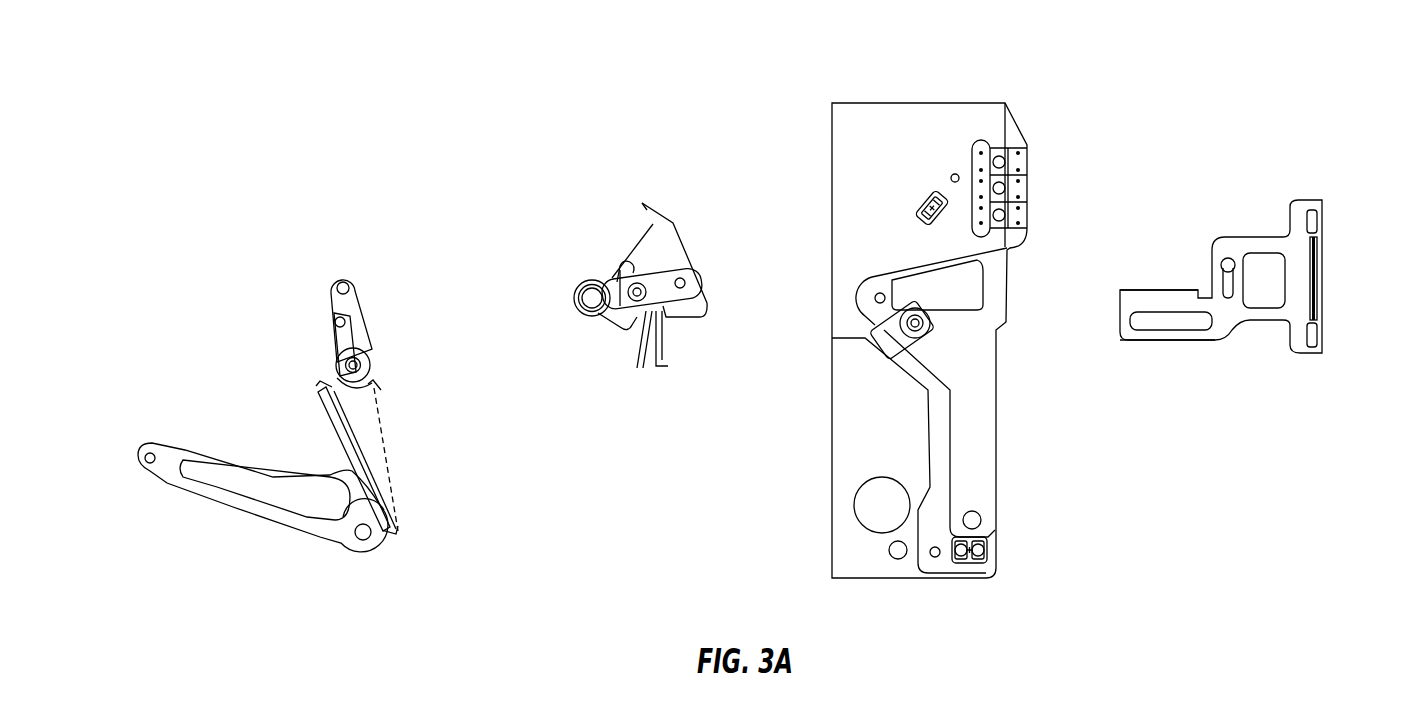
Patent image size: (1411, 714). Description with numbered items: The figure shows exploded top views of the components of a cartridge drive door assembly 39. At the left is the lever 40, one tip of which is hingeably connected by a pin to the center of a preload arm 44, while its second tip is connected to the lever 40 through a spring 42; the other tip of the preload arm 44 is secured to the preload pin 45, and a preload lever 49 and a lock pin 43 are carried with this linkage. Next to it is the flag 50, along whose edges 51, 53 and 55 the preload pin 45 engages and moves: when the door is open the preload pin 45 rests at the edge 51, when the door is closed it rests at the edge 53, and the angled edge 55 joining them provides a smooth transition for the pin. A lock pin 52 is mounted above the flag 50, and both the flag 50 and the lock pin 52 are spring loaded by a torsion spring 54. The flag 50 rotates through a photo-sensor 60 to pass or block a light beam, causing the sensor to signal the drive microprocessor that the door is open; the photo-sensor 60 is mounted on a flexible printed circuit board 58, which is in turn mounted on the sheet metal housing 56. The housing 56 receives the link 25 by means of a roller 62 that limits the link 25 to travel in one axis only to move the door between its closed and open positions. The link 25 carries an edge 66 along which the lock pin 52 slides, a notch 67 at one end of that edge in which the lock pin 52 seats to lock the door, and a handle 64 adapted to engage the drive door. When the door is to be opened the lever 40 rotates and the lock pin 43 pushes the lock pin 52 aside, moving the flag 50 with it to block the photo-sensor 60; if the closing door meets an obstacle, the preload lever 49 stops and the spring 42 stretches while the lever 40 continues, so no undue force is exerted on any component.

The cartridge drive door assembly 39 is at (1158, 93).
The lever 40 is at (185, 497).
The spring 42 is at (327, 430).
The lock pin 43 is at (334, 319).
The preload arm 44 is at (332, 291).
The preload pin 45 is at (349, 277).
The preload lever 49 is at (364, 362).
The flag 50 is at (678, 222).
The edge 51 is at (690, 317).
The lock pin 52 is at (623, 287).
The edge 53 is at (636, 366).
The torsion spring 54 is at (620, 330).
The edge 55 is at (676, 362).
The sheet metal housing 56 is at (988, 417).
The flexible printed circuit board 58 is at (930, 373).
The photo-sensor 60 is at (925, 200).
The roller 62 is at (917, 312).
The handle 64 is at (1325, 257).
The edge 66 is at (1148, 288).
The notch 67 is at (1207, 290).
The link 25 is at (1236, 311).